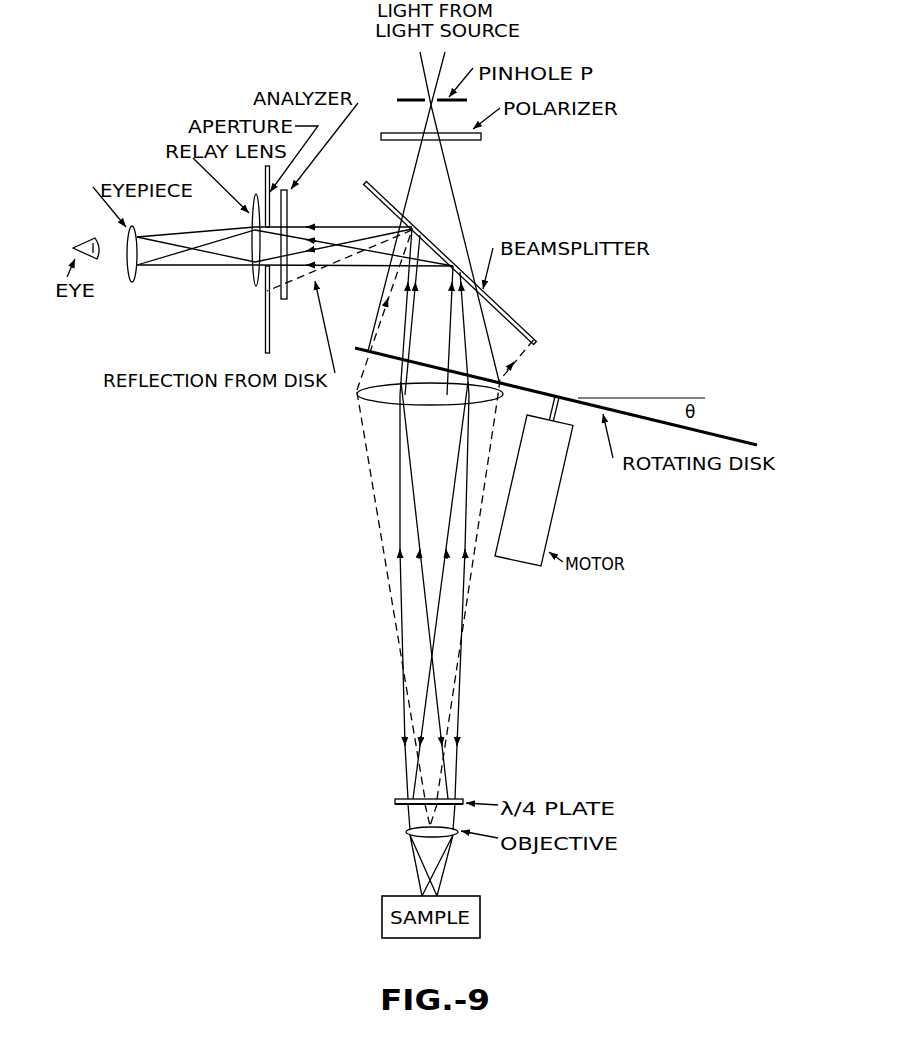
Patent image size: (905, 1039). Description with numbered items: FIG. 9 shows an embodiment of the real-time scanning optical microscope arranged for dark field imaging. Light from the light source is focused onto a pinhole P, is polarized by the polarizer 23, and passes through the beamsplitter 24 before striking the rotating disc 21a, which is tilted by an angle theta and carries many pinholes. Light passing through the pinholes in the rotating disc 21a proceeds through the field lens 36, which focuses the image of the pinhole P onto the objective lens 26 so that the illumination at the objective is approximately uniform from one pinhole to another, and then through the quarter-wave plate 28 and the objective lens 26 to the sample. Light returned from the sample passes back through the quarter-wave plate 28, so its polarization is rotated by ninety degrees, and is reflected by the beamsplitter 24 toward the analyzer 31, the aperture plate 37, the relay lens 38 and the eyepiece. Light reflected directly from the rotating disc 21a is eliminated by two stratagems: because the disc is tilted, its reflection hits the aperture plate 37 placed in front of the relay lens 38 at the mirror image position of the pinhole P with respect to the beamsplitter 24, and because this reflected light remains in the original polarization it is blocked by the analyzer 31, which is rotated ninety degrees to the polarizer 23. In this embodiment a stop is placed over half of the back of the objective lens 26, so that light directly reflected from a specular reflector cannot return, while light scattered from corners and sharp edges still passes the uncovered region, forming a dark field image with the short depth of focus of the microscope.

The polarizer 23 is at (472, 142).
The beamsplitter 24 is at (517, 318).
The rotating disc 21a is at (567, 398).
The field lens 36 is at (378, 403).
The relay lens 38 is at (257, 285).
The aperture plate 37 is at (266, 306).
The analyzer 31 is at (289, 298).
The λ/4 plate 28 is at (400, 798).
The objective lens 26 is at (407, 832).